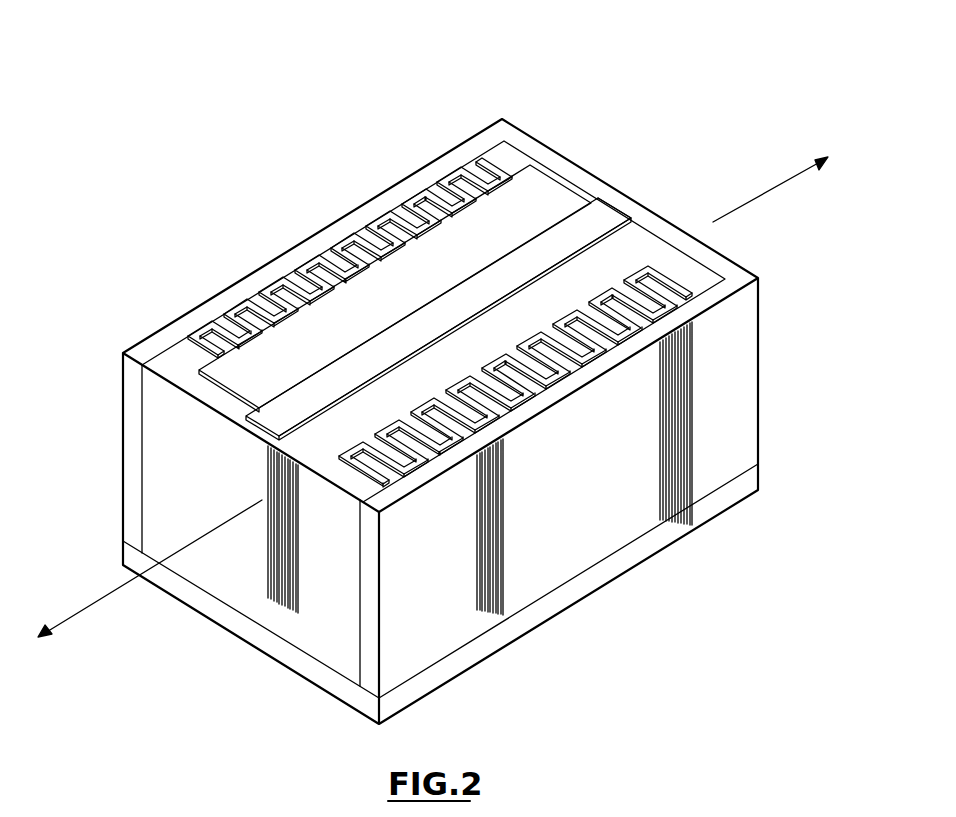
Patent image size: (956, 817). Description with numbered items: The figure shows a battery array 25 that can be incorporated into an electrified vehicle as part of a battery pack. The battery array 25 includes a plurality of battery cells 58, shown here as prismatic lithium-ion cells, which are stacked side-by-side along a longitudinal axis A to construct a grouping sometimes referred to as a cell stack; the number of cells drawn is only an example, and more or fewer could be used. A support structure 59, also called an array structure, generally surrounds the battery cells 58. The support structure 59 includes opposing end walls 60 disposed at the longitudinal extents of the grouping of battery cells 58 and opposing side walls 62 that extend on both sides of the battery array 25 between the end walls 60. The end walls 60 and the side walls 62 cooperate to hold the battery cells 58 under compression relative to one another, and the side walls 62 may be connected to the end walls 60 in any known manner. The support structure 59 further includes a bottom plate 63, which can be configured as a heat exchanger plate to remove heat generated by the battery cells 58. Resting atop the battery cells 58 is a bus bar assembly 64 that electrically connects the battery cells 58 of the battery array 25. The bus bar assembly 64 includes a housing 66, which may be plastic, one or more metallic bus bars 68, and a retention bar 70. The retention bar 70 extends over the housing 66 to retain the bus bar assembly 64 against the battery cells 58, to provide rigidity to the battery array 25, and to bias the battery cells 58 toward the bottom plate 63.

The battery array 25 is at (534, 82).
The battery cells 58 is at (478, 162).
The support structure 59 is at (98, 461).
The end walls 60 is at (722, 260).
The side walls 62 is at (135, 400).
The bottom plate 63 is at (262, 637).
The bus bar assembly 64 is at (547, 195).
The housing 66 is at (648, 250).
The bus bars 68 is at (317, 277).
The retention bar 70 is at (608, 215).
The longitudinal axis A is at (433, 397).